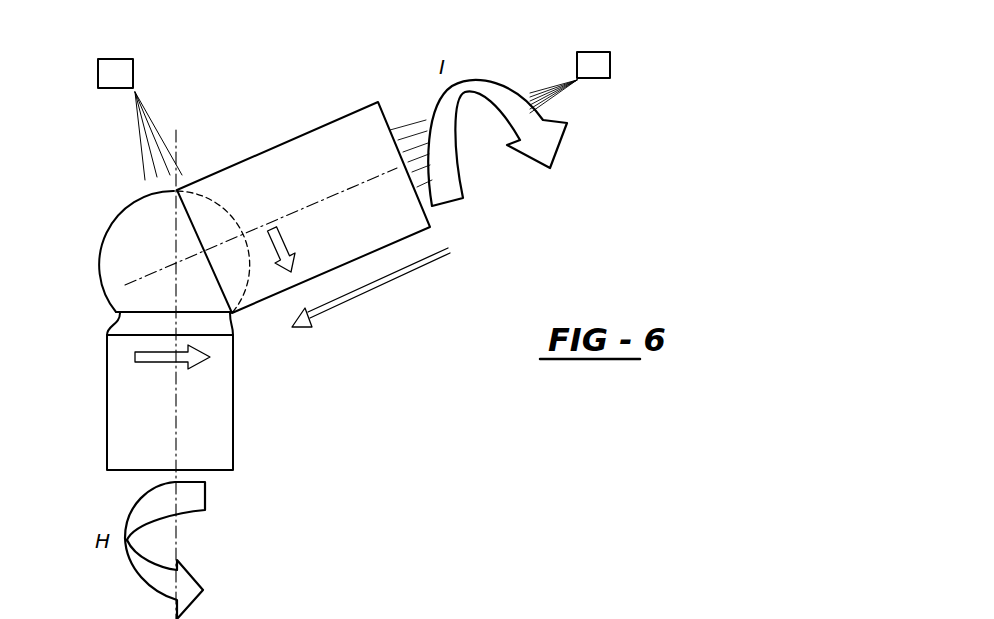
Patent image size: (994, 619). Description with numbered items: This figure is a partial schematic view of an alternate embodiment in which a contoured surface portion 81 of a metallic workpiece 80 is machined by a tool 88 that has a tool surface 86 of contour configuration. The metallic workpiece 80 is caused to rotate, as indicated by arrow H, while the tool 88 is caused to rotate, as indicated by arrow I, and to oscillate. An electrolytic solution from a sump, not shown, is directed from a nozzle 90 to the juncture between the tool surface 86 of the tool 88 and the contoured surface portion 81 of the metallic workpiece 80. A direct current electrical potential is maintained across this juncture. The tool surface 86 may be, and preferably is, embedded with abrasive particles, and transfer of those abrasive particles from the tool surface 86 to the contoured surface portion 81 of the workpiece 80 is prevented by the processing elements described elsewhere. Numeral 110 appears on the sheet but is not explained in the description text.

The metallic workpiece 80 is at (107, 390).
The contoured surface portion 81 is at (120, 213).
The tool surface 86 is at (228, 213).
The tool 88 is at (334, 120).
The nozzle 90 is at (98, 73).
The support 110 is at (80, 611).